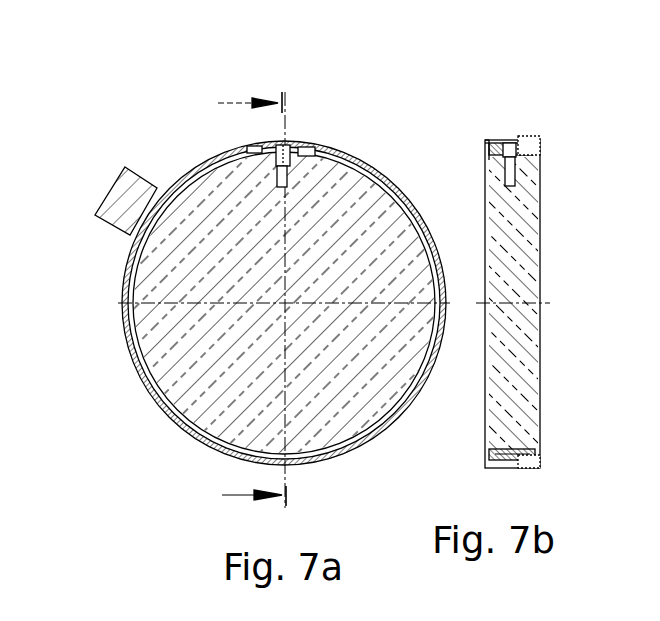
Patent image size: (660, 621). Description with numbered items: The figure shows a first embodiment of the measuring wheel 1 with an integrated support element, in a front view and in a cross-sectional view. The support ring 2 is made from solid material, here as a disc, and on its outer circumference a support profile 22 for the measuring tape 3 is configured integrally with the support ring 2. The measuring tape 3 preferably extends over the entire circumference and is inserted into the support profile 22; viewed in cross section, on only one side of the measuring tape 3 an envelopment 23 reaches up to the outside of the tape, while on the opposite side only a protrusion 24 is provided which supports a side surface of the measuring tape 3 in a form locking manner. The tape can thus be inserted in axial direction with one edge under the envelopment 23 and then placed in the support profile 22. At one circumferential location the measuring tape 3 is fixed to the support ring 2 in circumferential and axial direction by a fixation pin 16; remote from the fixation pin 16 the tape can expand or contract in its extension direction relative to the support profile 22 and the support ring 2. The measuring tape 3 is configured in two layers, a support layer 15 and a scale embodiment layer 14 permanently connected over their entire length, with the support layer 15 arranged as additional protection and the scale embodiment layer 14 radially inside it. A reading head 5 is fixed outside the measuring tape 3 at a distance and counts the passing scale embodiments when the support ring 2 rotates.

In FIG. 7B, the measuring wheel 1 is at (411, 75).
In FIG. 7A, the support ring 2 is at (188, 182).
In FIG. 7B, the support ring 2 is at (528, 322).
In FIG. 7A, the measuring tape 3 is at (343, 150).
In FIG. 7B, the measuring tape 3 is at (508, 135).
In FIG. 7A, the reading head 5 is at (115, 182).
In FIG. 7A, the scale embodiment layer 14 is at (258, 150).
In FIG. 7B, the scale embodiment layer 14 is at (505, 458).
In FIG. 7A, the support layer 15 is at (305, 148).
In FIG. 7B, the support layer 15 is at (520, 463).
In FIG. 7A, the fixation pin 16 is at (288, 148).
In FIG. 7B, the fixation pin 16 is at (510, 175).
In FIG. 7B, the support profile 22 is at (492, 138).
In FIG. 7B, the envelopment 23 is at (530, 136).
In FIG. 7B, the protrusion 24 is at (487, 150).